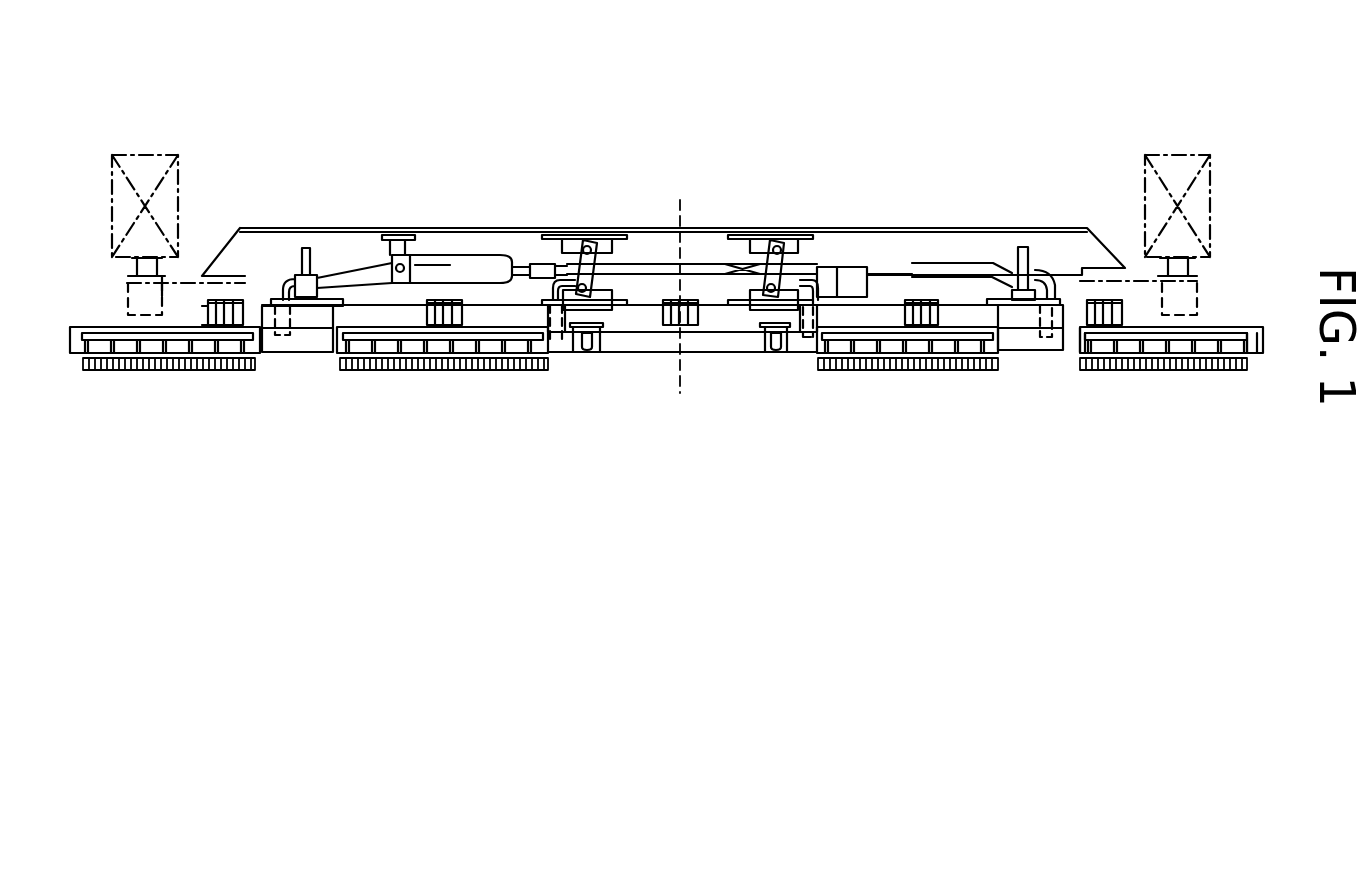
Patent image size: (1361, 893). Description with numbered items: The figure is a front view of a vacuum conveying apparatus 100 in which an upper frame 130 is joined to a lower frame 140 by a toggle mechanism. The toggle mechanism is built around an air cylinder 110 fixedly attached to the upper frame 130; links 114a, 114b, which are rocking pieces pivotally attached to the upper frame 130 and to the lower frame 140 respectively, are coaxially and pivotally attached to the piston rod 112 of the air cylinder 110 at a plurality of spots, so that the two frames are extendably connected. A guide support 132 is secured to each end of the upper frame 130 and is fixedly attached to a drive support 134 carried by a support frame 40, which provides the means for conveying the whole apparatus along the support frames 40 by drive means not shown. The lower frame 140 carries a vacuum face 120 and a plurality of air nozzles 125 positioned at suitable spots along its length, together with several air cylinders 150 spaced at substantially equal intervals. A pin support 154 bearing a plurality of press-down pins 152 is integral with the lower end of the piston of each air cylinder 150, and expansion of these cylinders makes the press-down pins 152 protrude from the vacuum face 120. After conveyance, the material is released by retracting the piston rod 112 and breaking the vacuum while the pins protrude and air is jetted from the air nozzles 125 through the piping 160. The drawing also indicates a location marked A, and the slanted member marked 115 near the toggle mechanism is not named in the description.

The vacuum conveying apparatus 100 is at (657, 128).
The support frame 40 is at (175, 182).
The air cylinder 110 is at (432, 252).
The piston rod 112 is at (667, 267).
The link 114a is at (786, 266).
The link 114b is at (835, 270).
The link 115 is at (592, 246).
The vacuum face 120 is at (105, 354).
The air nozzle 125 is at (771, 353).
The upper frame 130 is at (1023, 227).
The guide support 132 is at (165, 290).
The drive support 134 is at (1190, 297).
The lower frame 140 is at (1258, 338).
The air cylinder 150 is at (222, 320).
The press-down pin 152 is at (395, 364).
The pin support 154 is at (1080, 334).
The piping 160 is at (283, 286).
The location A is at (845, 307).